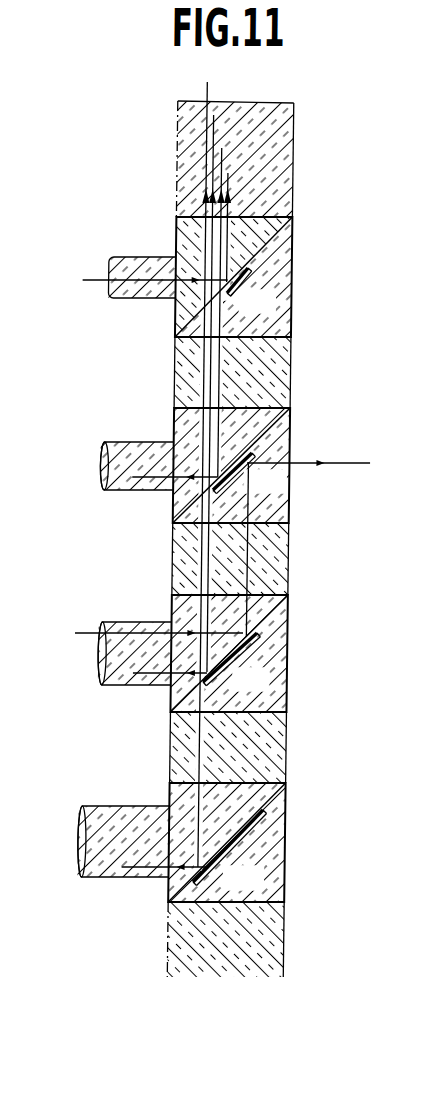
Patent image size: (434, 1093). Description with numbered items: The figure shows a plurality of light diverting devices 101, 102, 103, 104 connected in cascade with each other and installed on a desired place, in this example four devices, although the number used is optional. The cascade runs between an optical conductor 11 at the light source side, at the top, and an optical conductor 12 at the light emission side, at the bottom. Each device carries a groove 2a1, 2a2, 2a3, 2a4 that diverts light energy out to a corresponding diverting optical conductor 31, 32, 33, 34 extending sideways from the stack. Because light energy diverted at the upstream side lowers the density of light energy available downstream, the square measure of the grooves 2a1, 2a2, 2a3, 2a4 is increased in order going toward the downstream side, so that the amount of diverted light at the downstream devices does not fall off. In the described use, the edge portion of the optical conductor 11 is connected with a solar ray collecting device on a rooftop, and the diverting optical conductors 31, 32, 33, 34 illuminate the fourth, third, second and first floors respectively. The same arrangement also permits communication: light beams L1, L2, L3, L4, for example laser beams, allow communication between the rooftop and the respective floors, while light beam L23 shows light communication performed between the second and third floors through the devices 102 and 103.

The optical conductor at the light source side 11 is at (292, 155).
The optical conductor at the light emission side 12 is at (284, 952).
The light diverting device 101 is at (286, 258).
The light diverting device 102 is at (289, 430).
The light diverting device 103 is at (290, 617).
The light diverting device 104 is at (285, 823).
The groove 2a1 is at (240, 287).
The groove 2a2 is at (238, 472).
The groove 2a3 is at (240, 657).
The groove 2a4 is at (233, 852).
The diverting optical conductor 31 is at (144, 297).
The diverting optical conductor 32 is at (141, 492).
The diverting optical conductor 33 is at (138, 683).
The diverting optical conductor 34 is at (130, 877).
The light beam L1 is at (240, 226).
The light beam L2 is at (232, 310).
The light beam L3 is at (222, 391).
The light beam L4 is at (215, 473).
The light beam L23 is at (206, 552).